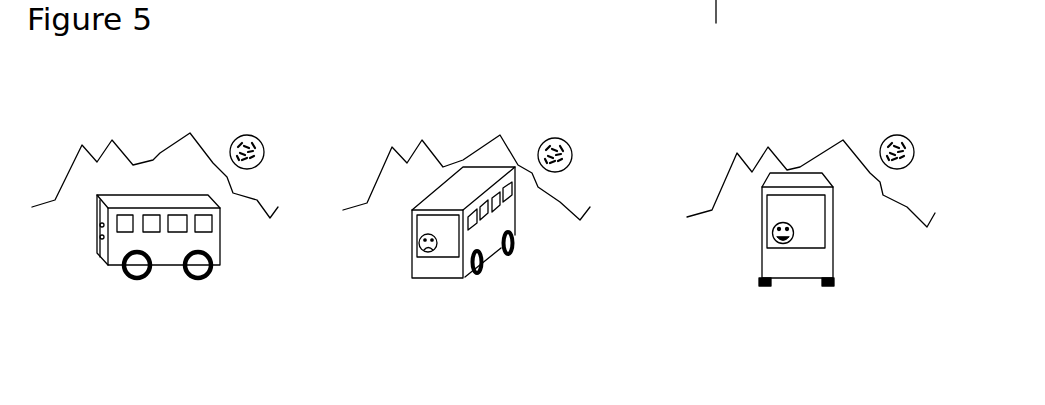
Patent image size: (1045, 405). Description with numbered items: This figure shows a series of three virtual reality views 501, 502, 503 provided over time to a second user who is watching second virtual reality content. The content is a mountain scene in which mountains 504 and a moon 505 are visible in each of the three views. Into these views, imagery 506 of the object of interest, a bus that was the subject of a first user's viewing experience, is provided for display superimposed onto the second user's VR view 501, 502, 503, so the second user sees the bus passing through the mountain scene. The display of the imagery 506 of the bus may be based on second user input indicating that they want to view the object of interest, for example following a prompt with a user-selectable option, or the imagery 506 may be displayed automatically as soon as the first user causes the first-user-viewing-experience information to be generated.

The VR view 501 is at (53, 155).
The VR view 502 is at (396, 98).
The VR view 503 is at (734, 105).
The mountains 504 is at (174, 158).
The moon 505 is at (260, 133).
The imagery of the bus 506 is at (213, 247).